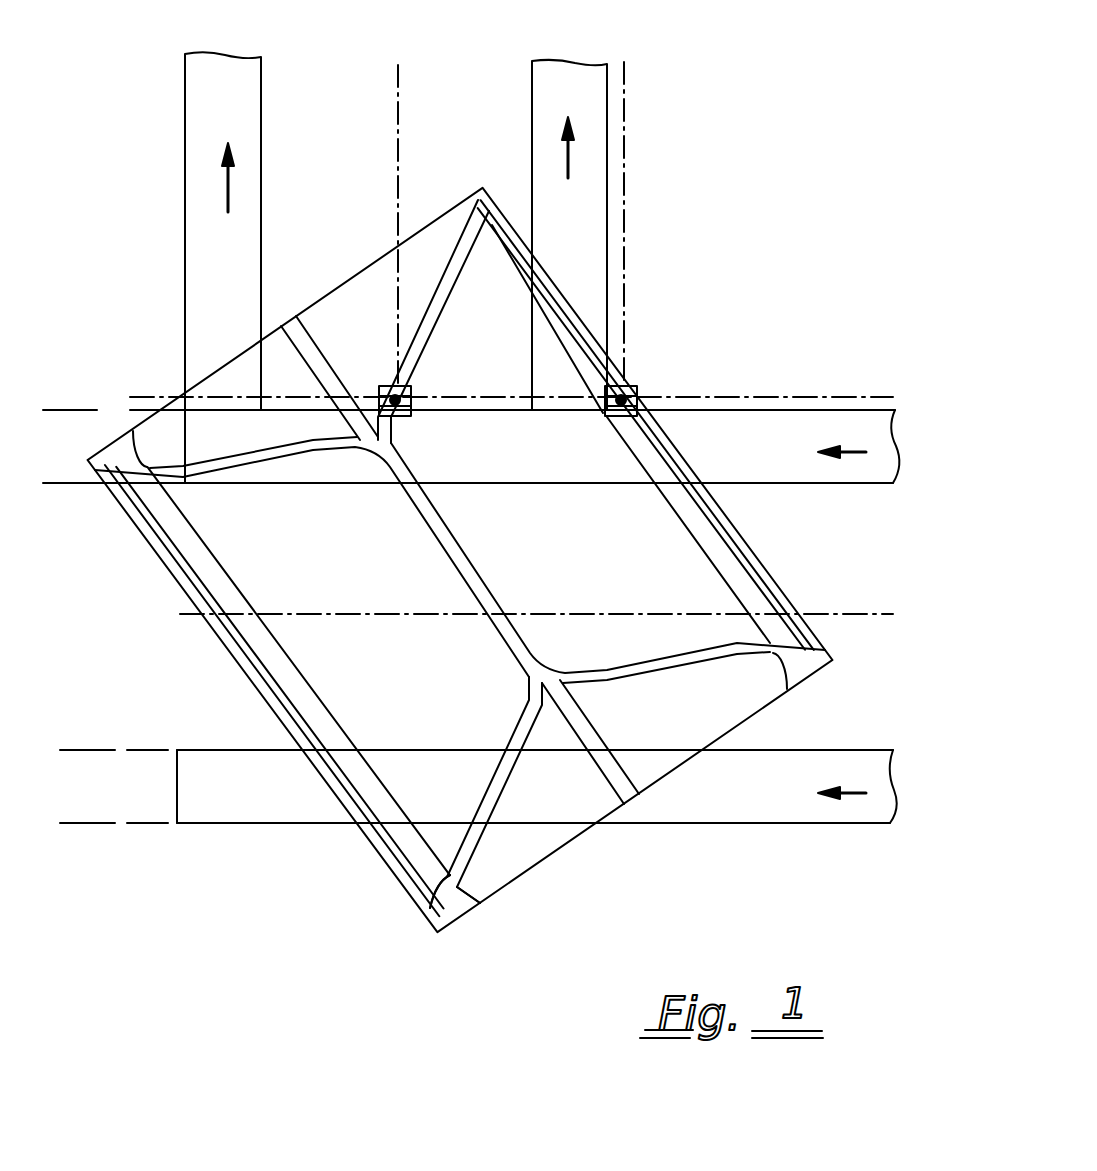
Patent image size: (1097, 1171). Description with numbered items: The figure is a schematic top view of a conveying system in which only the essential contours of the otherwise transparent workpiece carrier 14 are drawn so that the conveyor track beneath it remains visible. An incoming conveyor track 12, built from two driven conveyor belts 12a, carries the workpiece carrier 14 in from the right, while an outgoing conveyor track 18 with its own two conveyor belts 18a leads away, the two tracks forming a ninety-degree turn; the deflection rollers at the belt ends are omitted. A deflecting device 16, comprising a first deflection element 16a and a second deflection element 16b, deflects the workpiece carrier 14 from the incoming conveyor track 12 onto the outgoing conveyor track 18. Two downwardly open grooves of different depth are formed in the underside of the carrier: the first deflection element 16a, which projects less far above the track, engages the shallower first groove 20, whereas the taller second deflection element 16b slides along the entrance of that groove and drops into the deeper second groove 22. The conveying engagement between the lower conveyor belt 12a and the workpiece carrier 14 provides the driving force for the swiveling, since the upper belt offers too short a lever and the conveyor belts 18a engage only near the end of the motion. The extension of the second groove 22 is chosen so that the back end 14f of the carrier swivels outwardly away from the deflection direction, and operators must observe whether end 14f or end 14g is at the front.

The incoming conveyor track 12 is at (887, 372).
The conveyor belts 12a is at (852, 760).
The workpiece carrier 14 is at (447, 543).
The back end 14f is at (520, 875).
The end 14g is at (203, 380).
The deflecting device 16 is at (668, 356).
The first deflection element 16a is at (637, 368).
The second deflection element 16b is at (380, 385).
The outgoing conveyor track 18 is at (652, 84).
The conveyor belts 18a is at (547, 72).
The first downwardly open groove 20 is at (747, 563).
The second downwardly open groove 22 is at (450, 293).